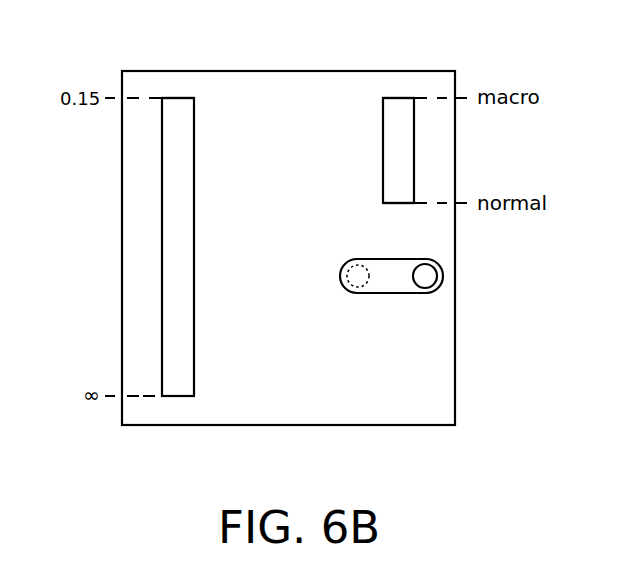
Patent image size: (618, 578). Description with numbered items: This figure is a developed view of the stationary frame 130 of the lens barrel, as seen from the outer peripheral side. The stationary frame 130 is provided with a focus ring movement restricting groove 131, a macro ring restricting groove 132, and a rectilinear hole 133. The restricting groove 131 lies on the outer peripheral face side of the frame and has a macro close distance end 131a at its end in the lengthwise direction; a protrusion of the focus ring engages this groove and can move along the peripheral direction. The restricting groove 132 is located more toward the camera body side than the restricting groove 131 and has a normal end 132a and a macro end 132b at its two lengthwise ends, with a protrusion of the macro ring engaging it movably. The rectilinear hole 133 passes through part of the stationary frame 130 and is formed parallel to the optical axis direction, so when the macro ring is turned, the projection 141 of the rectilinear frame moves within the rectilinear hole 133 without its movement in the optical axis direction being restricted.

The stationary frame 130 is at (149, 83).
The focus ring movement restricting groove 131 is at (172, 260).
The macro close distance end 131a is at (180, 97).
The macro ring restricting groove 132 is at (400, 160).
The normal end 132a is at (400, 206).
The macro end 132b is at (400, 97).
The rectilinear hole 133 is at (390, 258).
The projection 141 is at (425, 280).